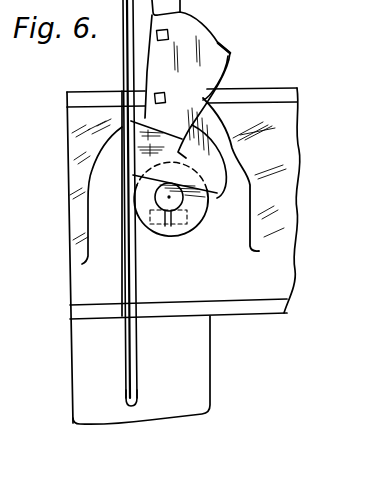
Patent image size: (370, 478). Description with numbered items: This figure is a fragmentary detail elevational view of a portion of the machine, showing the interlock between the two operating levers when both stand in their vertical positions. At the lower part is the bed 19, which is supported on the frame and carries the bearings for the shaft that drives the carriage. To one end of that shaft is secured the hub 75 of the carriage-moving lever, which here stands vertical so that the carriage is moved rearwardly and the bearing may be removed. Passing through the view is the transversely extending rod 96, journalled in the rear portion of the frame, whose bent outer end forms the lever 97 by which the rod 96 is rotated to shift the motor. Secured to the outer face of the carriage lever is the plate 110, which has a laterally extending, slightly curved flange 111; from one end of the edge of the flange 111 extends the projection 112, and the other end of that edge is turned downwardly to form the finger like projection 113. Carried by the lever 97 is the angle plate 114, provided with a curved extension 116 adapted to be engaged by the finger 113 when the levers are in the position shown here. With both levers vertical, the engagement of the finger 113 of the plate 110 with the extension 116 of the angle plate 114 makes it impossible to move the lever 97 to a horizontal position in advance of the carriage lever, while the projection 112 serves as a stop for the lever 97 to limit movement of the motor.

The bed 19 is at (71, 290).
The hub 75 is at (206, 214).
The rod 96 is at (139, 401).
The lever 97 is at (138, 276).
The plate 110 is at (223, 43).
The flange 111 is at (214, 83).
The projection 112 is at (231, 58).
The finger like projection 113 is at (204, 185).
The angle plate 114 is at (203, 197).
The curved extension 116 is at (212, 182).